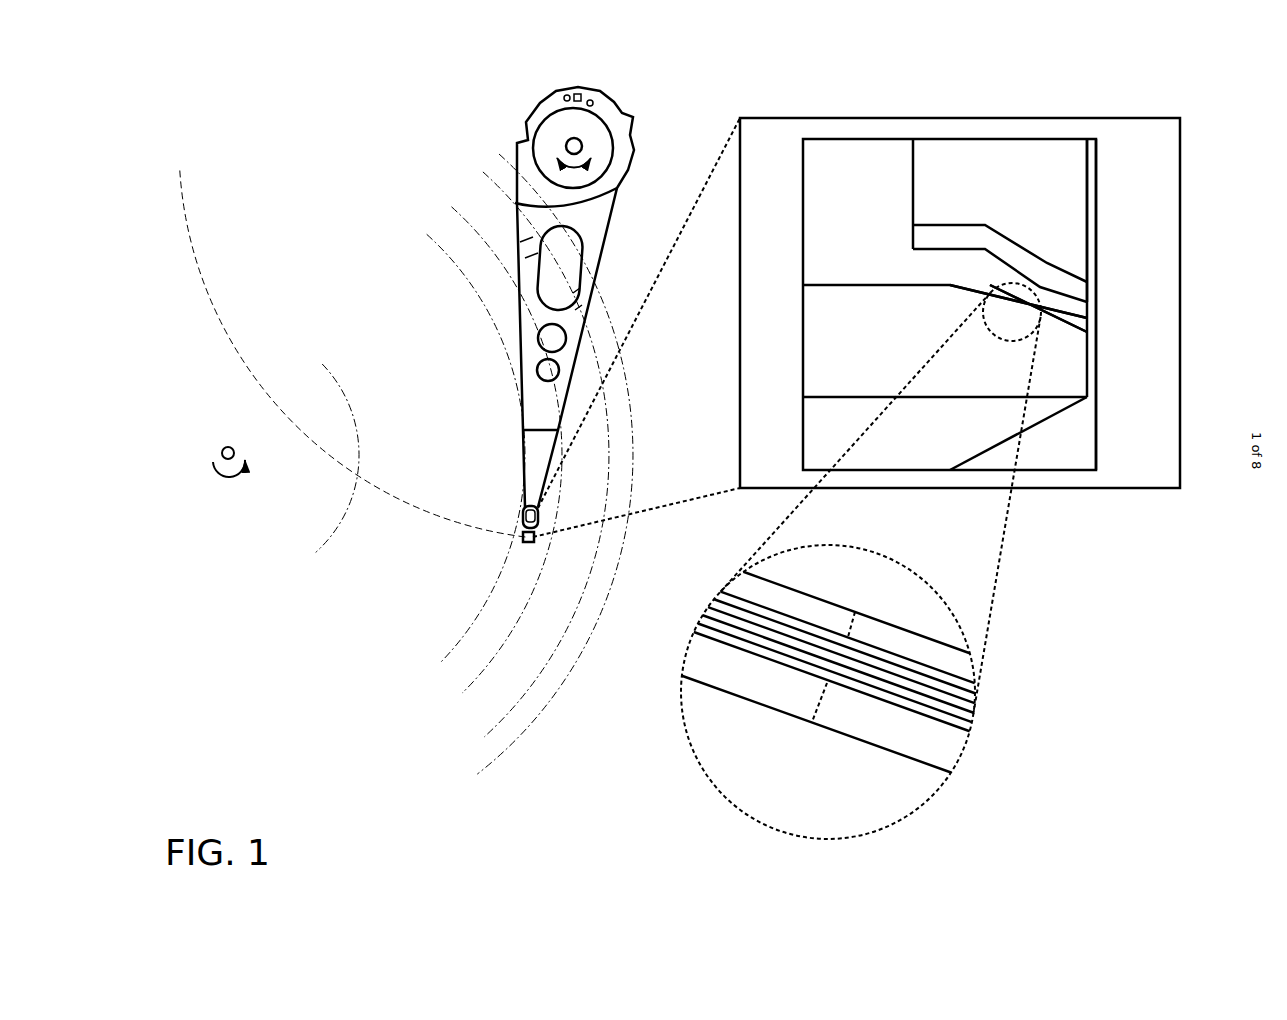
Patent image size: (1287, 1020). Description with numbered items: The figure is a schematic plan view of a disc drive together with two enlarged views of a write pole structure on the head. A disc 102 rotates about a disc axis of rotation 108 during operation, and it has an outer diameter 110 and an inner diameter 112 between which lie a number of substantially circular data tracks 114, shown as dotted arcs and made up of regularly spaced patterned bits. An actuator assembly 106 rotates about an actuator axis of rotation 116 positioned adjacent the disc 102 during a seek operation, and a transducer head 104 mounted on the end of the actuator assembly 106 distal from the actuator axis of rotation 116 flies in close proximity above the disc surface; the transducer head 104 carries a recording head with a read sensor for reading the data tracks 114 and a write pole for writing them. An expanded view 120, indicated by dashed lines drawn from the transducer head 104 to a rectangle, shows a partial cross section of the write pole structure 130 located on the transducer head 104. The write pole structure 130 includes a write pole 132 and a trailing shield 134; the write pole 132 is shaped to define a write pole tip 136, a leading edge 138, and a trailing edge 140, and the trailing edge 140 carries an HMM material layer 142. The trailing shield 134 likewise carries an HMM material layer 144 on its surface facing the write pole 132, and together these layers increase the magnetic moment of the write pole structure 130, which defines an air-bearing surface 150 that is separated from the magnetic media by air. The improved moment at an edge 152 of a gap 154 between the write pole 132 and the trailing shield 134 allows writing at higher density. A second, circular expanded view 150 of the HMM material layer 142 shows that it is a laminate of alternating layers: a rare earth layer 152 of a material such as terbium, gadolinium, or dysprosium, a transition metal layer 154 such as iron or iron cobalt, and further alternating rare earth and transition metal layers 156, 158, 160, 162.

The disc 102 is at (258, 652).
The transducer head 104 is at (525, 540).
The actuator assembly 106 is at (517, 140).
The disc axis of rotation 108 is at (212, 456).
The outer diameter 110 is at (495, 737).
The inner diameter 112 is at (327, 535).
The data tracks 114 is at (447, 680).
The actuator axis of rotation 116 is at (557, 150).
The expanded view 120 is at (1040, 488).
The write pole structure 130 is at (803, 418).
The write pole 132 is at (803, 340).
The trailing shield 134 is at (977, 212).
The write pole tip 136 is at (1087, 380).
The leading edge 138 is at (1040, 422).
The trailing edge 140 is at (1087, 318).
The HMM material layer 142 is at (1087, 332).
The HMM material layer 144 is at (1097, 295).
The air-bearing surface 150 is at (1097, 163).
The edge of gap / rare earth layer 152 is at (1085, 313).
The gap / transition metal layer 154 is at (997, 273).
The rare earth material layer 156 is at (975, 703).
The transition metal layer 158 is at (974, 713).
The rare earth material layer 160 is at (972, 722).
The transition metal layer 162 is at (970, 731).